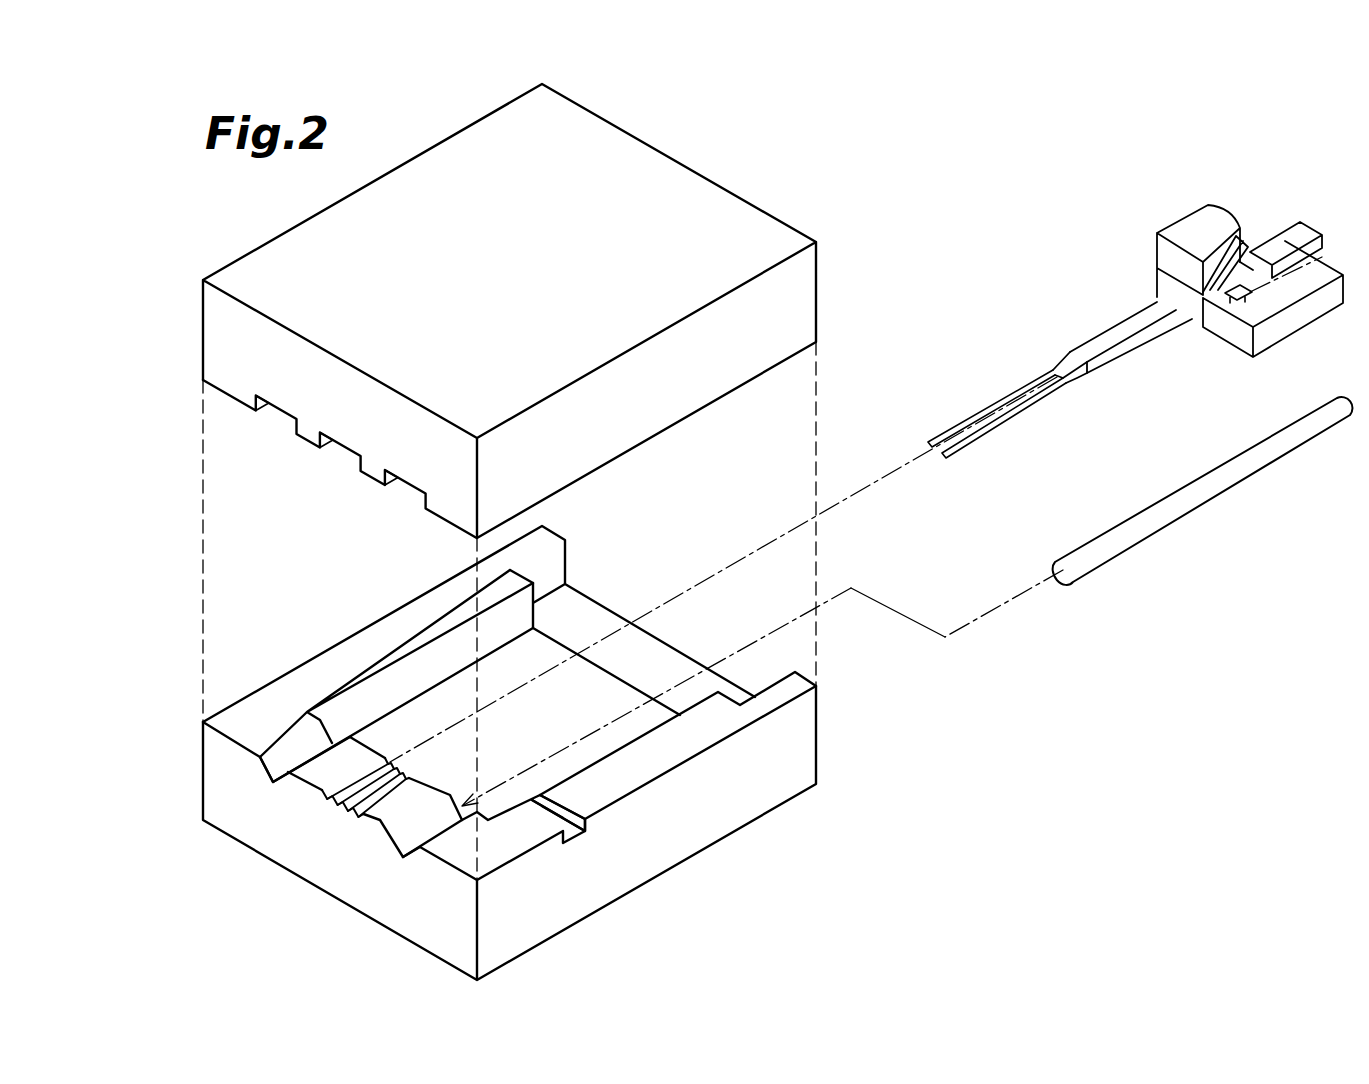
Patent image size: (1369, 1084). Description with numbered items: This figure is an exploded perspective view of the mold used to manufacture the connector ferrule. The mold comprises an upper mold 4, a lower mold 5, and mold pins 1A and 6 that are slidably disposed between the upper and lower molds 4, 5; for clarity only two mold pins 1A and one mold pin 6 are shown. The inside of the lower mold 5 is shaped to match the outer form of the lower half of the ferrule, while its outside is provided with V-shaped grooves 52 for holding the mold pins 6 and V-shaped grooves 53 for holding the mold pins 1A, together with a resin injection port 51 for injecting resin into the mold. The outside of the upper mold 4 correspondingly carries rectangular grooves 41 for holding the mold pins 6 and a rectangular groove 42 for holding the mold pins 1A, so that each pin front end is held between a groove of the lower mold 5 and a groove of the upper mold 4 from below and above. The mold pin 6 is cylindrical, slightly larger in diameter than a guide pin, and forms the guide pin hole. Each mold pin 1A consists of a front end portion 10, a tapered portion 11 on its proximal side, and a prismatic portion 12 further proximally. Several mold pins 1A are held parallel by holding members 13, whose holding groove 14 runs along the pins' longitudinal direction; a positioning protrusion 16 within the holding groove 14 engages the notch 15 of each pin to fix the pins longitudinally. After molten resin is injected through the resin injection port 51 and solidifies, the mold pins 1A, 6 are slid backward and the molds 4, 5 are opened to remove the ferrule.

The mold pin 1A is at (1051, 334).
The upper mold 4 is at (818, 290).
The lower mold 5 is at (550, 753).
The mold pin 6 is at (1230, 476).
The front end portion 10 is at (997, 421).
The tapered portion 11 is at (1076, 380).
The prismatic portion 12 is at (1135, 354).
The holding member 13 is at (1157, 288).
The holding groove 14 is at (1210, 317).
The notch 15 is at (1237, 283).
The positioning protrusion 16 is at (1237, 298).
The rectangular groove 41 is at (273, 409).
The rectangular groove 42 is at (341, 447).
The resin injection port 51 is at (569, 807).
The V-shaped groove 52 is at (264, 760).
The V-shaped groove 53 is at (322, 797).